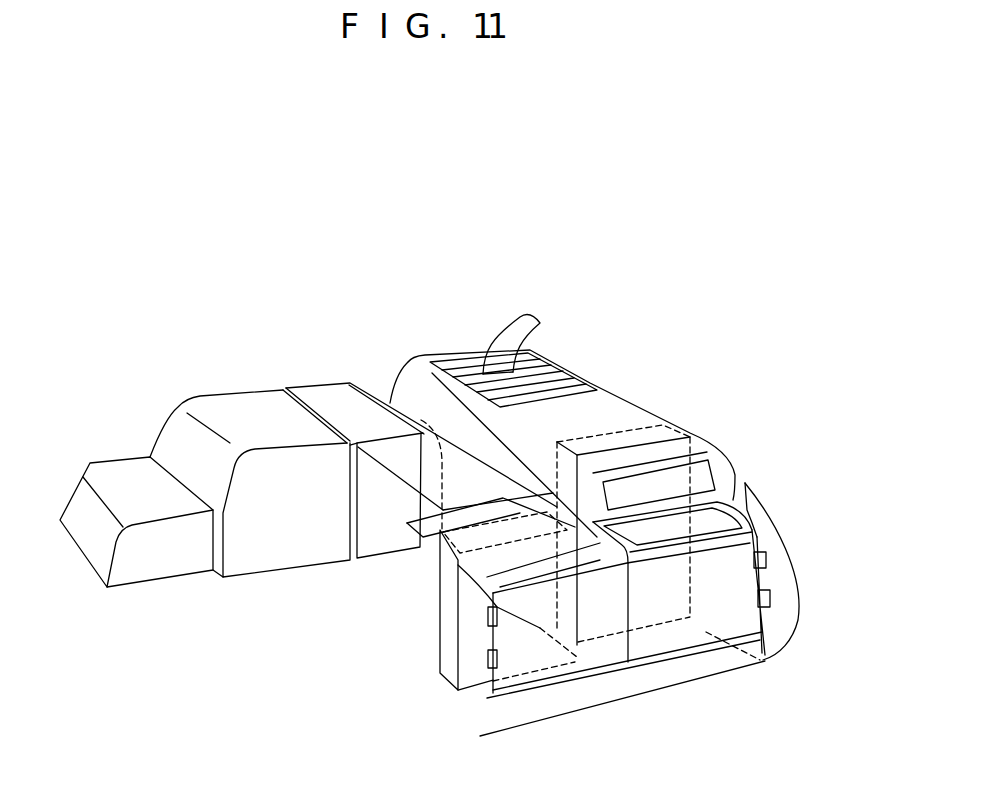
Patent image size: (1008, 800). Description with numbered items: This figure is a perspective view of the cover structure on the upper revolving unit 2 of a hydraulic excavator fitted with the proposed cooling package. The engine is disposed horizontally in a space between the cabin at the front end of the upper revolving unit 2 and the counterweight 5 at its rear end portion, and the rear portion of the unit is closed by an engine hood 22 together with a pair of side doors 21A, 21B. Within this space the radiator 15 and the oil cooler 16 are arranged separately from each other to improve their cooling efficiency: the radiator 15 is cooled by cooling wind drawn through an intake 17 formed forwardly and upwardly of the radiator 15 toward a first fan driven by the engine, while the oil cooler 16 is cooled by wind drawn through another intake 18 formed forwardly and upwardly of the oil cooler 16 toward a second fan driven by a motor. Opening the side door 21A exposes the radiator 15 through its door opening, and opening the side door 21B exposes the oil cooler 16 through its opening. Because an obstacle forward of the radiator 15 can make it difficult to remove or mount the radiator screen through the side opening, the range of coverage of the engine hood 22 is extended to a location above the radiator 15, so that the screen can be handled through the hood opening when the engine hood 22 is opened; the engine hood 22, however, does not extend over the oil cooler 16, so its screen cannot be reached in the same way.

The upper revolving unit 2 is at (310, 373).
The engine hood 22 is at (617, 390).
The radiator 15 is at (617, 430).
The intake 17 is at (677, 527).
The intake 18 is at (493, 560).
The oil cooler 16 is at (450, 628).
The side door 21A is at (743, 590).
The side door 21B is at (493, 634).
The counterweight 5 is at (790, 548).